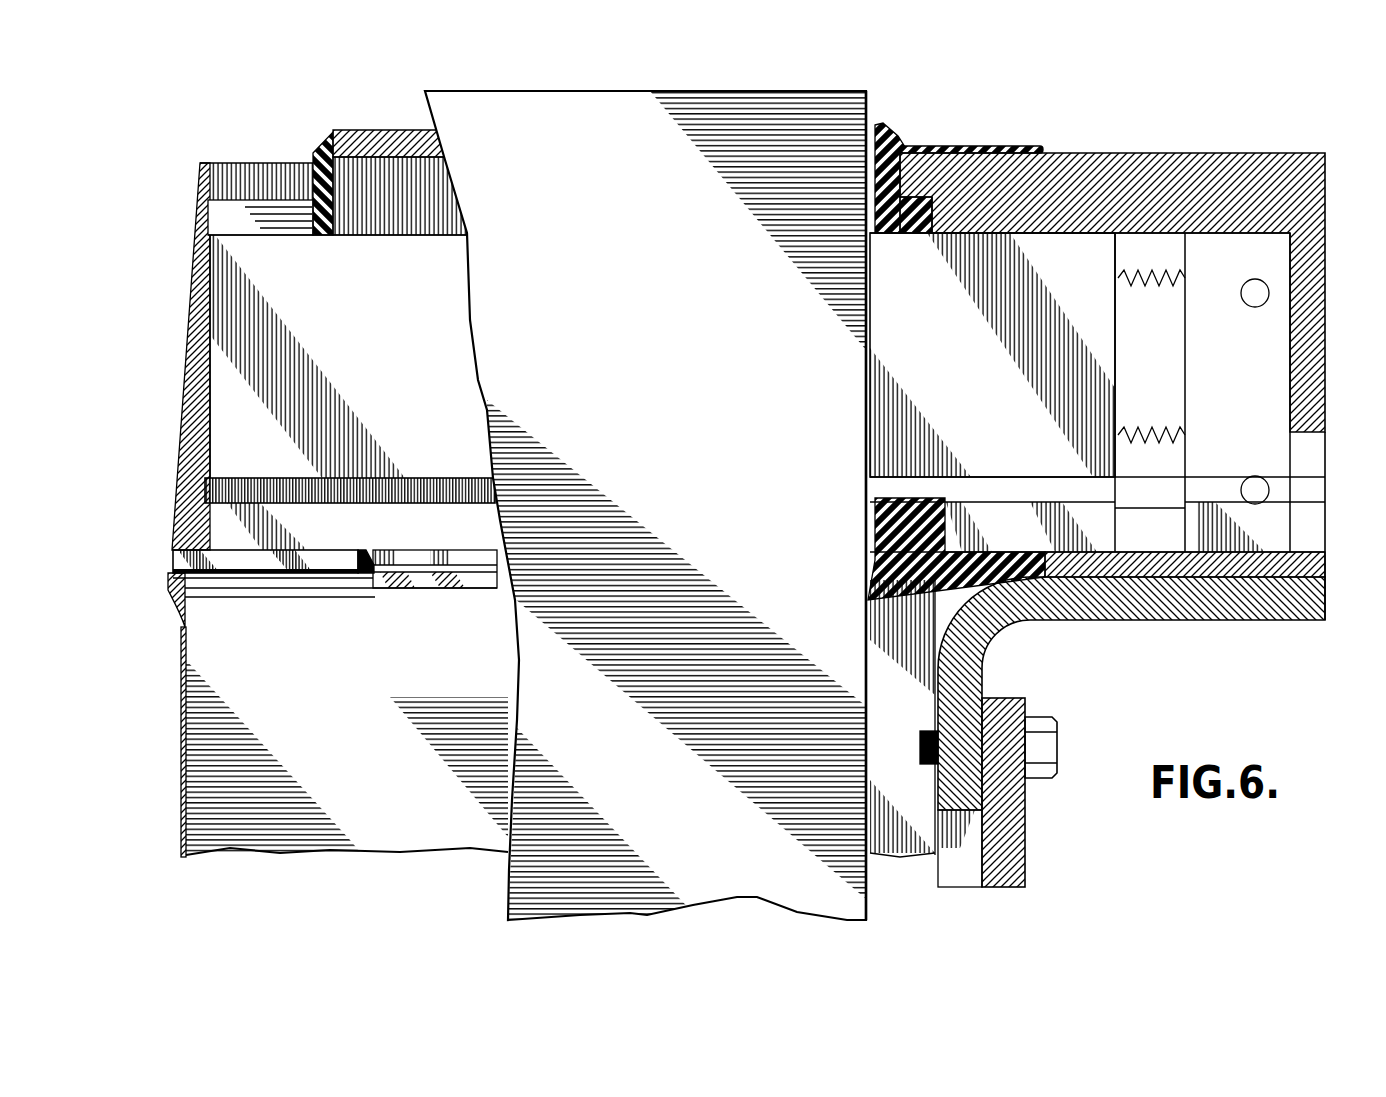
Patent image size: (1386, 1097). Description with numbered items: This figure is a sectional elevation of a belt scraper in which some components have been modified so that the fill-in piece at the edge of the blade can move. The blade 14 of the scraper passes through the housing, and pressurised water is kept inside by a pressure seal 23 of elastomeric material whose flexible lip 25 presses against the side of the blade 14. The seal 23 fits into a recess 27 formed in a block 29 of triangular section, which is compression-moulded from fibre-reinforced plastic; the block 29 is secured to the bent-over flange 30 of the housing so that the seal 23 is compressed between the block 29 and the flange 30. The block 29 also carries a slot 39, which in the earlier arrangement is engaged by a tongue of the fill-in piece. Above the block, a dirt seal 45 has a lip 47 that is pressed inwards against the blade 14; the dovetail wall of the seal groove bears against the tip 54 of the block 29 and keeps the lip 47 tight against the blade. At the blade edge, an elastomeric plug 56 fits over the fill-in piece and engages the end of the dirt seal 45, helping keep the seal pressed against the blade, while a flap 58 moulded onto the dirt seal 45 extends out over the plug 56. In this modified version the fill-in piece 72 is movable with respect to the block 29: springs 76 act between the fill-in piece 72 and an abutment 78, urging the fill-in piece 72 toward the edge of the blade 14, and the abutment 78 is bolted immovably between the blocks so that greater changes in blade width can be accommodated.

The blade 14 is at (742, 400).
The pressure seal 23 is at (482, 592).
The flexible lip 25 is at (418, 590).
The recess 27 is at (272, 563).
The block 29 is at (437, 350).
The bent-over flange 30 is at (270, 597).
The slot 39 is at (430, 490).
The dirt seal 45 is at (408, 212).
The lip 47 is at (360, 130).
The tip of the block 54 is at (270, 163).
The plug 56 is at (1190, 160).
The flap 58 is at (998, 147).
The fill-in piece 72 is at (965, 350).
The springs 76 is at (1137, 435).
The abutment 78 is at (1272, 380).